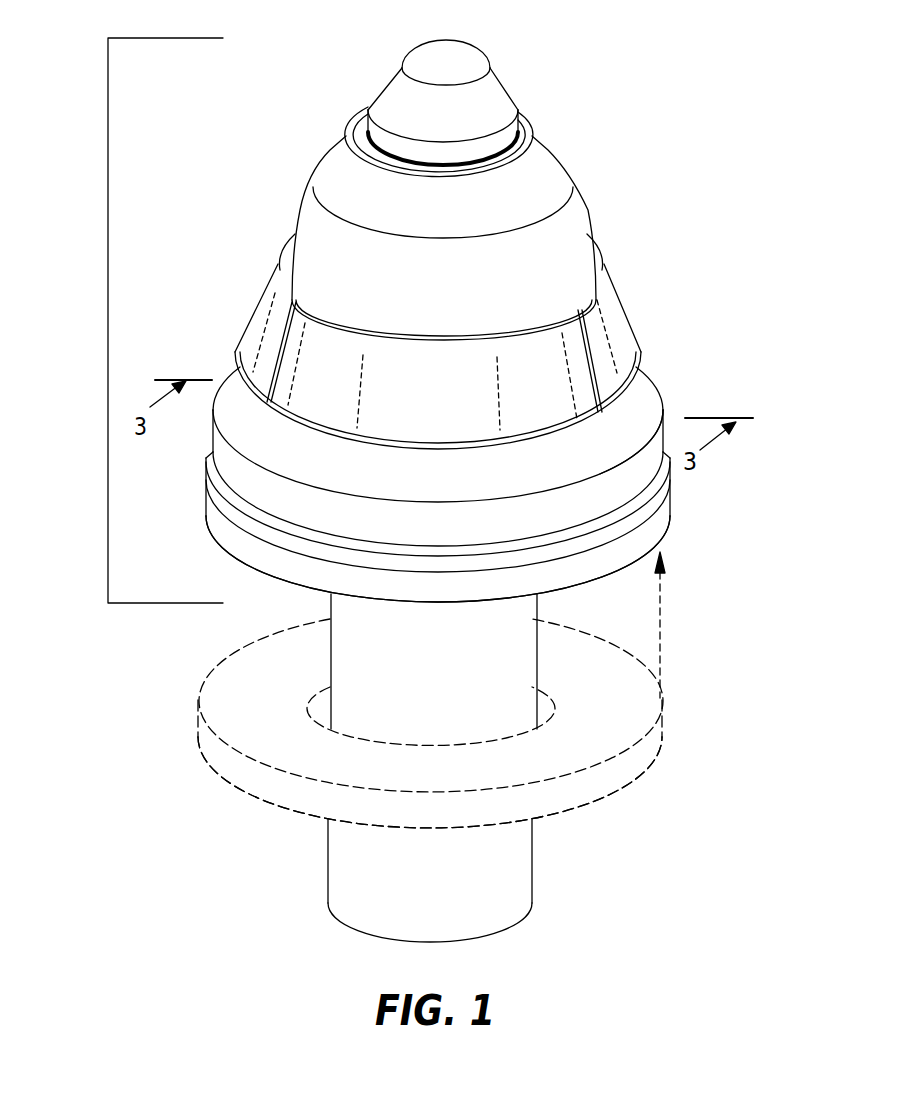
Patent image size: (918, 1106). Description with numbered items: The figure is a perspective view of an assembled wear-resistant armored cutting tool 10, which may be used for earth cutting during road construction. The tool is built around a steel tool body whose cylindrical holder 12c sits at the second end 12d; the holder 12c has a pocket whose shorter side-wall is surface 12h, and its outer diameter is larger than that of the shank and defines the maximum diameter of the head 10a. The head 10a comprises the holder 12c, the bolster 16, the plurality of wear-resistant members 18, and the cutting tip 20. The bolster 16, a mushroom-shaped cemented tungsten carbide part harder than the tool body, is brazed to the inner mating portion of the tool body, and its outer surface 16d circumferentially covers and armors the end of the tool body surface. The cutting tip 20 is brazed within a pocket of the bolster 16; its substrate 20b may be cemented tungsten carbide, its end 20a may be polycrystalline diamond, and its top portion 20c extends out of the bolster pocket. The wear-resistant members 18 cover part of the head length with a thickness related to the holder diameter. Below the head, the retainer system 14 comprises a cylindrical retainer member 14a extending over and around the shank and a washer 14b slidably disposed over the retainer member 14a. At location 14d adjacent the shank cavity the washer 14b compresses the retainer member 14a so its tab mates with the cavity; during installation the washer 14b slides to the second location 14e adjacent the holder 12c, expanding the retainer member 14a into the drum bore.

The wear-resistant armored cutting tool 10 is at (667, 113).
The head 10a is at (108, 315).
The holder 12c is at (248, 460).
The second end 12d is at (642, 358).
The surface 12h is at (650, 412).
The retainer system 14 is at (470, 737).
The retainer member 14a is at (350, 857).
The washer 14b is at (236, 532).
The location 14d is at (662, 702).
The second location 14e is at (669, 510).
The bolster 16 is at (491, 238).
The outer surface 16d is at (558, 268).
The wear-resistant members 18 is at (266, 290).
The cutting tip 20 is at (522, 138).
The end 20a is at (453, 52).
The substrate 20b is at (493, 100).
The top portion 20c is at (410, 42).